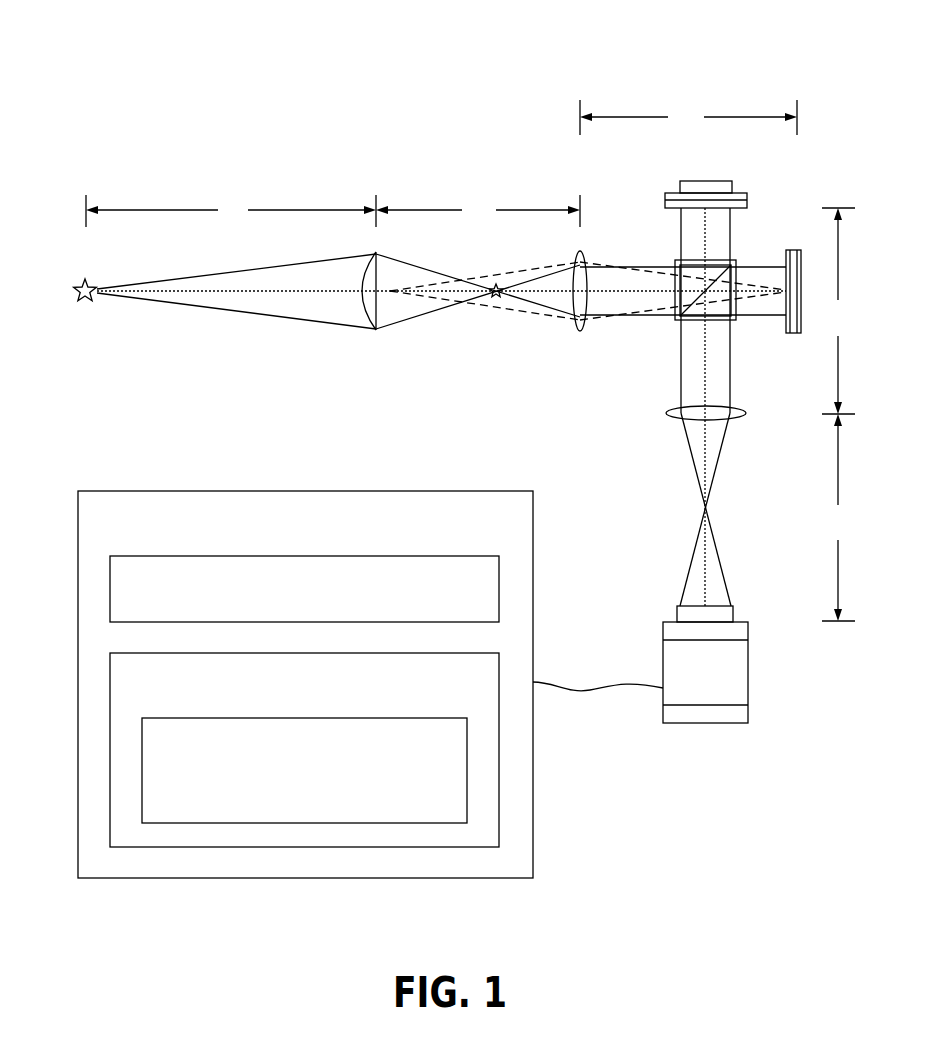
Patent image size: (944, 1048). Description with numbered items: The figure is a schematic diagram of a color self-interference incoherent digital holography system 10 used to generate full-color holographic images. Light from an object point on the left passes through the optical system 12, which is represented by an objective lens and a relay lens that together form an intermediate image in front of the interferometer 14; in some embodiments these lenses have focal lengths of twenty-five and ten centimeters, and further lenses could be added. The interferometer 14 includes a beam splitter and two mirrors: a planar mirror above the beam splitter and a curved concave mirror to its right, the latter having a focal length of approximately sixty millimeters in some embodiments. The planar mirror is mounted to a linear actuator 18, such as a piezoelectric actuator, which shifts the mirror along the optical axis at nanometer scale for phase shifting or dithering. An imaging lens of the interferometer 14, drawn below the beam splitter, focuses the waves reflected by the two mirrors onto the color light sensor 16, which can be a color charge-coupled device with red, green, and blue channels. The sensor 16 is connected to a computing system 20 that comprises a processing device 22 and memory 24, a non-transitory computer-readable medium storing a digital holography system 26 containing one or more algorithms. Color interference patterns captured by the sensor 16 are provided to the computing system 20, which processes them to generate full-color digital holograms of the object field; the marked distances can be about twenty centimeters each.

The color self-interference incoherent digital holography (CSIDH) system 10 is at (394, 37).
The optical system 12 is at (597, 388).
The interferometer 14 is at (800, 196).
The color light sensor 16 is at (782, 711).
The linear actuator 18 is at (716, 183).
The computing system 20 is at (305, 684).
The processing device 22 is at (304, 589).
The memory 24 is at (304, 750).
The digital holography system 26 is at (304, 770).